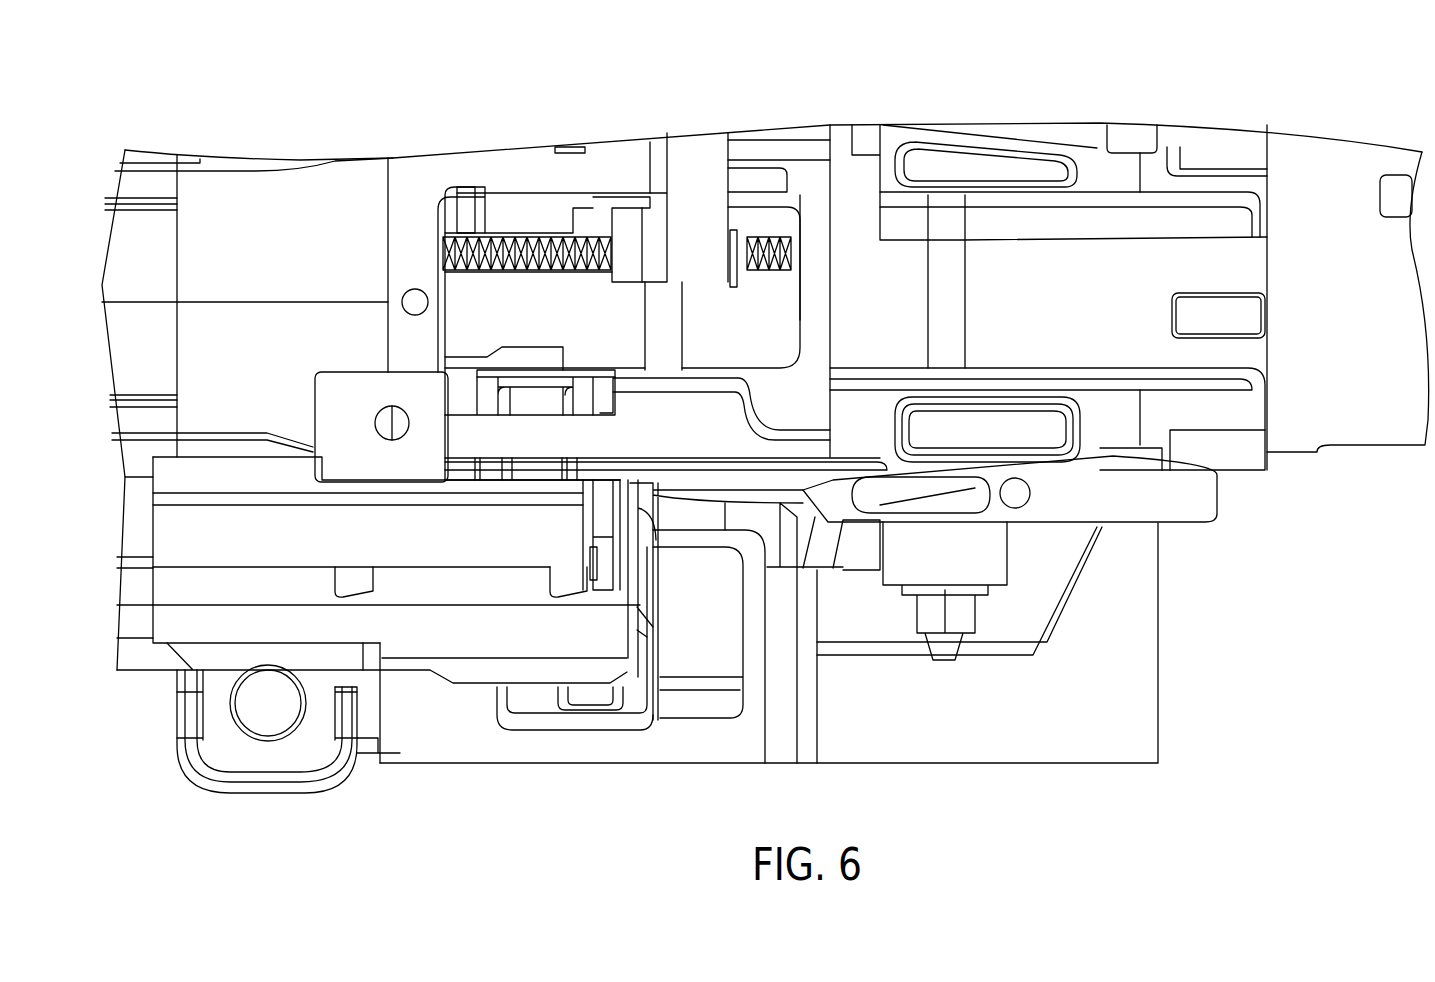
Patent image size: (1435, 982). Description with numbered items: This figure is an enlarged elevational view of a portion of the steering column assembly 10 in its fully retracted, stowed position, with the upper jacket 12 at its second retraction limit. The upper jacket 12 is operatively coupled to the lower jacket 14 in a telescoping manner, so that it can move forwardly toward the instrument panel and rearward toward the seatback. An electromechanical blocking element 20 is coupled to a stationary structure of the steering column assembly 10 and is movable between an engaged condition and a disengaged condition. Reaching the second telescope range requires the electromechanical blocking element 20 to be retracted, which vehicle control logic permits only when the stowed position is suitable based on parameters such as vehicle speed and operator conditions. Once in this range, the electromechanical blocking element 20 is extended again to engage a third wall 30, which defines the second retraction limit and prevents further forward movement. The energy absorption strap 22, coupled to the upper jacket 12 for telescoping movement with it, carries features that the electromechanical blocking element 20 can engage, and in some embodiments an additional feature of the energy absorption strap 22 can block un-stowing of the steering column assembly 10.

The steering column assembly 10 is at (1013, 76).
The upper jacket 12 is at (1330, 160).
The lower jacket 14 is at (330, 177).
The electromechanical blocking element 20 is at (520, 355).
The energy absorption strap 22 is at (780, 227).
The third wall 30 is at (568, 360).